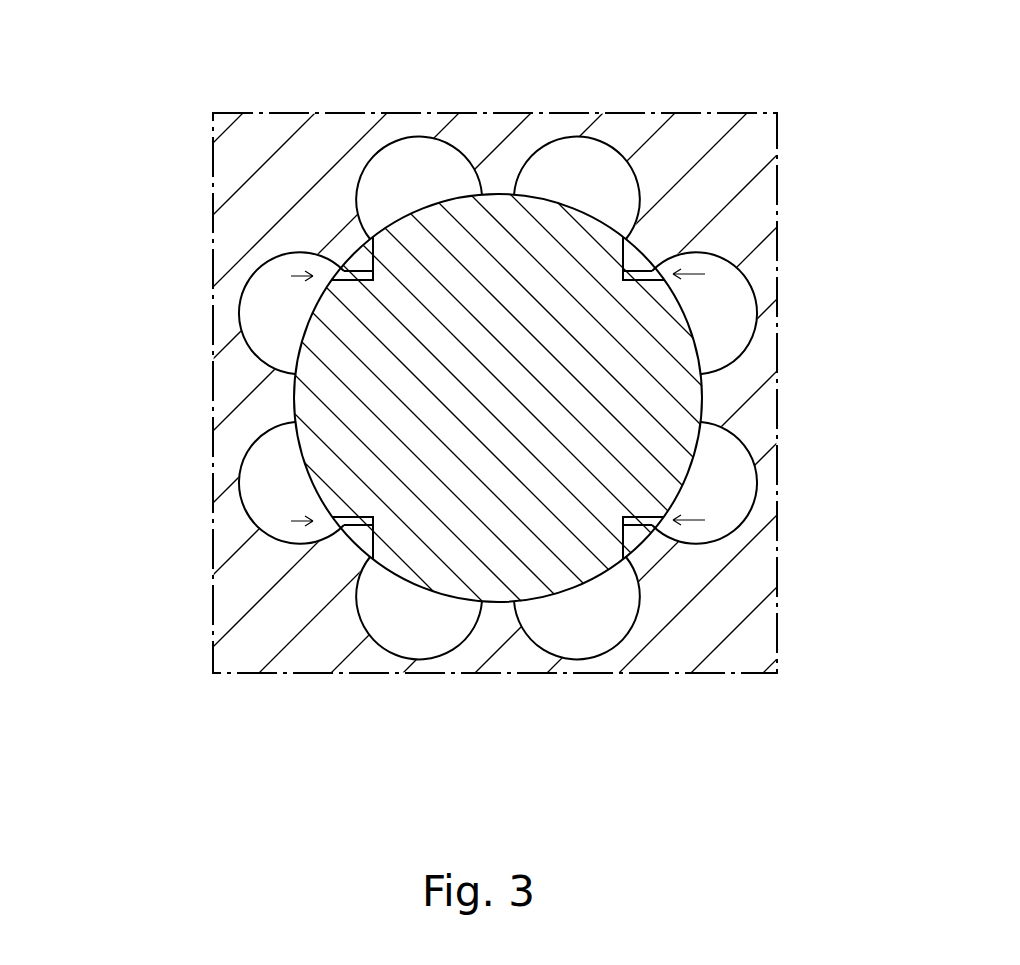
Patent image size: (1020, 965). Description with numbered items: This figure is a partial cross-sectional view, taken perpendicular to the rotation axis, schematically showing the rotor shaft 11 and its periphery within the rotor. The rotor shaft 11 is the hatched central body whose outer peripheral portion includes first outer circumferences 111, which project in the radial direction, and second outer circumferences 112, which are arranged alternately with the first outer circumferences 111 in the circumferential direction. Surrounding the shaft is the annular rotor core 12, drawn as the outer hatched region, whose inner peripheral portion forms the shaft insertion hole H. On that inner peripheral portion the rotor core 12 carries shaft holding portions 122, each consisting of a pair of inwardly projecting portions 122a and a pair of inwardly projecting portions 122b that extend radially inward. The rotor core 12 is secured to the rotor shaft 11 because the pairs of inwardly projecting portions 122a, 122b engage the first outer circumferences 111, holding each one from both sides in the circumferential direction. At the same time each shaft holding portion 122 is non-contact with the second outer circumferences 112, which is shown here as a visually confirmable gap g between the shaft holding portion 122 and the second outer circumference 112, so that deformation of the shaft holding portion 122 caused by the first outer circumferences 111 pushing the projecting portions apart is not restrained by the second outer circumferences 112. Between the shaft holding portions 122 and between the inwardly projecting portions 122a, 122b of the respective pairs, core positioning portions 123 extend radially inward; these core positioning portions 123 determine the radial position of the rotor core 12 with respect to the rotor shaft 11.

The rotor shaft 11 is at (440, 478).
The rotor core 12 is at (248, 212).
The first outer circumference 111 is at (555, 262).
The second outer circumference 112 is at (345, 355).
The shaft holding portion 122 is at (485, 393).
The inwardly projecting portion 122a is at (343, 257).
The inwardly projecting portion 122b is at (350, 547).
The core positioning portion 123 is at (490, 153).
The gap g is at (291, 276).
The shaft insertion hole H is at (591, 618).